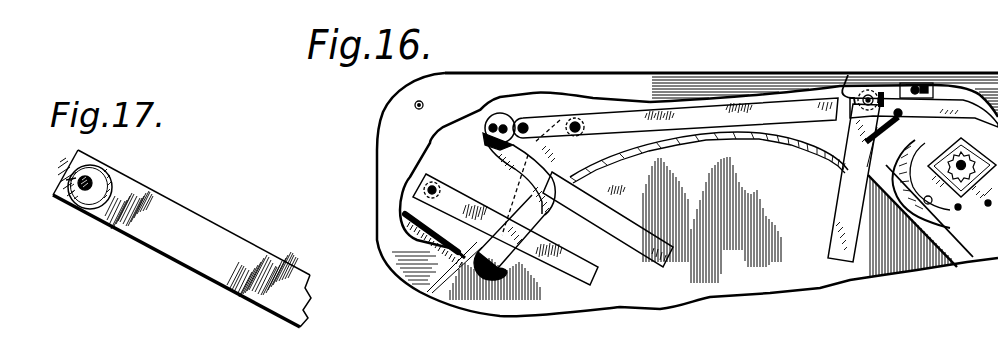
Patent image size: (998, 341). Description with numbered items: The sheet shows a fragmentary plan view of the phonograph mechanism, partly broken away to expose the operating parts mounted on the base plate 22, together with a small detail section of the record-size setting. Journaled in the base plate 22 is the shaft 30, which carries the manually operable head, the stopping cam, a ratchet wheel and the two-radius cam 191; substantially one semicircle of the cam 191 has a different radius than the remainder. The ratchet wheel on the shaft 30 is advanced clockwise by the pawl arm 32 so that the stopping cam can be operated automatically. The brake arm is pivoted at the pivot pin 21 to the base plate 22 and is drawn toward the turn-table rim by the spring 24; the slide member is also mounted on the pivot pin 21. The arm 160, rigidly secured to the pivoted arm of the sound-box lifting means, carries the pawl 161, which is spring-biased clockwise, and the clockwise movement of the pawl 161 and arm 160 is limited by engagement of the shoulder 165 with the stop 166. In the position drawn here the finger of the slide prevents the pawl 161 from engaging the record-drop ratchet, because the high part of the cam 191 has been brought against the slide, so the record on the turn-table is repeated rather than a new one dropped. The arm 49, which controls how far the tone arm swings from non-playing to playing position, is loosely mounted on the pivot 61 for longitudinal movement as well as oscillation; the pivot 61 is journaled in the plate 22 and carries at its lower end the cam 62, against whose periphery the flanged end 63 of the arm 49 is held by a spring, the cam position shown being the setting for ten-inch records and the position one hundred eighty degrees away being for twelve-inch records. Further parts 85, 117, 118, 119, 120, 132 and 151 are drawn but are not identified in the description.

In FIG. 16, the base plate 22 is at (487, 72).
In FIG. 16, the pivot pin 21 is at (580, 123).
In FIG. 16, the cam 191 is at (493, 113).
In FIG. 16, the shaft 30 is at (517, 118).
In FIG. 16, the link 119 is at (667, 115).
In FIG. 16, the hook 118 is at (848, 75).
In FIG. 16, the roller 117 is at (870, 88).
In FIG. 16, the shoulder 165 is at (888, 100).
In FIG. 16, the stop 166 is at (910, 83).
In FIG. 16, the pawl 161 is at (933, 112).
In FIG. 16, the ratchet wheel 151 is at (965, 158).
In FIG. 16, the guide band 132 is at (953, 222).
In FIG. 16, the arm 160 is at (850, 193).
In FIG. 16, the chamber 85 is at (615, 228).
In FIG. 16, the pivot 61 is at (460, 168).
In FIG. 17, the pivot 61 is at (97, 166).
In FIG. 17, the cam 62 is at (112, 186).
In FIG. 17, the flanged end 63 is at (66, 180).
In FIG. 16, the spring 24 is at (405, 223).
In FIG. 16, the link 120 is at (542, 228).
In FIG. 16, the pawl arm 32 is at (633, 200).
In FIG. 16, the arm 49 is at (566, 267).
In FIG. 17, the arm 49 is at (190, 220).